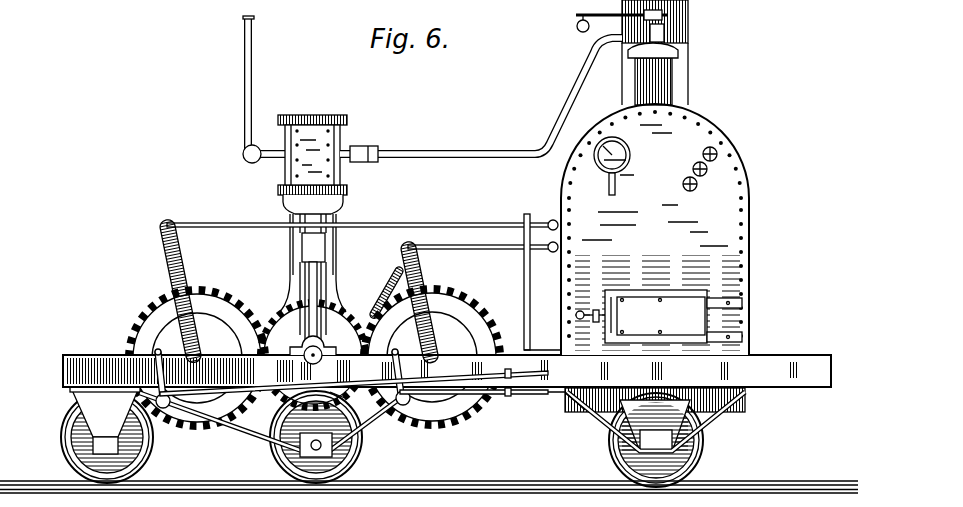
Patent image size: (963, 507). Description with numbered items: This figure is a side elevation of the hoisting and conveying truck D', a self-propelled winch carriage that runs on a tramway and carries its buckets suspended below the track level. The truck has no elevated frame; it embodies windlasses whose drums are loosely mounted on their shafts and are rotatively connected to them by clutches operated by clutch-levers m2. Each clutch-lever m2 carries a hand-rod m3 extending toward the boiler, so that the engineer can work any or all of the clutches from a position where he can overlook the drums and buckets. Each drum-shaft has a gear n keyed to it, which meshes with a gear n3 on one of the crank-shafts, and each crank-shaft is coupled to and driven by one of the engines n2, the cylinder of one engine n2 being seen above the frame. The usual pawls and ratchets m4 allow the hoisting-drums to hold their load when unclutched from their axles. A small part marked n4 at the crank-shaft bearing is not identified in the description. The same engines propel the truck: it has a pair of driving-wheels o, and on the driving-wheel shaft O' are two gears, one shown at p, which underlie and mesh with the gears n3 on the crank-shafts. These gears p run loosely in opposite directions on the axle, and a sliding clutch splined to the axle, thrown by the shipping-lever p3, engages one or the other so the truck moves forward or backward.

The engine n2 is at (295, 181).
The hoisting and conveying truck D' is at (481, 118).
The hand-rod m3 is at (364, 277).
The clutch-lever m2 is at (414, 265).
The gear n is at (314, 348).
The gear n3 is at (313, 355).
The pawls and ratchets m4 is at (395, 350).
The crank shaft hub n4 is at (314, 360).
The gear p is at (340, 397).
The driving-wheel shaft O' is at (271, 426).
The driving-wheel o is at (322, 438).
The shipping-lever p3 is at (387, 291).